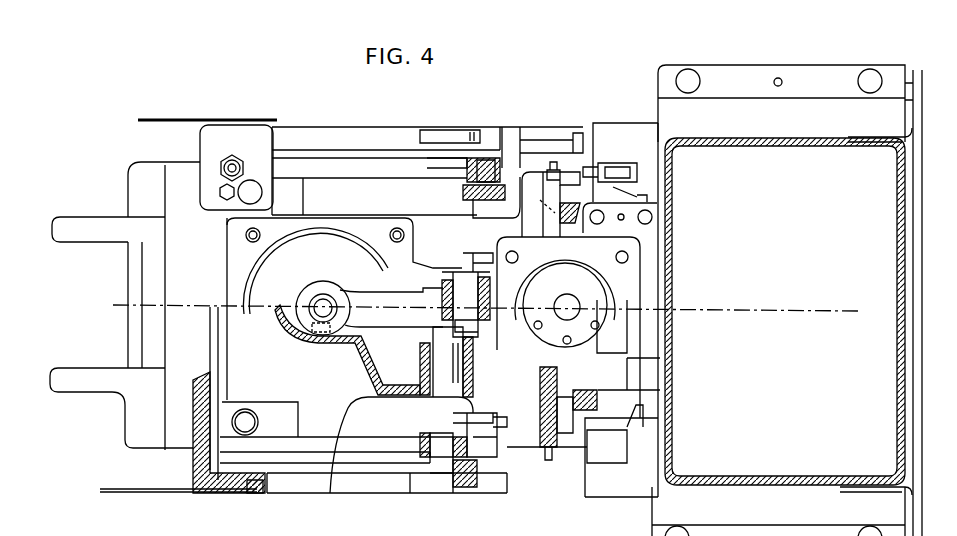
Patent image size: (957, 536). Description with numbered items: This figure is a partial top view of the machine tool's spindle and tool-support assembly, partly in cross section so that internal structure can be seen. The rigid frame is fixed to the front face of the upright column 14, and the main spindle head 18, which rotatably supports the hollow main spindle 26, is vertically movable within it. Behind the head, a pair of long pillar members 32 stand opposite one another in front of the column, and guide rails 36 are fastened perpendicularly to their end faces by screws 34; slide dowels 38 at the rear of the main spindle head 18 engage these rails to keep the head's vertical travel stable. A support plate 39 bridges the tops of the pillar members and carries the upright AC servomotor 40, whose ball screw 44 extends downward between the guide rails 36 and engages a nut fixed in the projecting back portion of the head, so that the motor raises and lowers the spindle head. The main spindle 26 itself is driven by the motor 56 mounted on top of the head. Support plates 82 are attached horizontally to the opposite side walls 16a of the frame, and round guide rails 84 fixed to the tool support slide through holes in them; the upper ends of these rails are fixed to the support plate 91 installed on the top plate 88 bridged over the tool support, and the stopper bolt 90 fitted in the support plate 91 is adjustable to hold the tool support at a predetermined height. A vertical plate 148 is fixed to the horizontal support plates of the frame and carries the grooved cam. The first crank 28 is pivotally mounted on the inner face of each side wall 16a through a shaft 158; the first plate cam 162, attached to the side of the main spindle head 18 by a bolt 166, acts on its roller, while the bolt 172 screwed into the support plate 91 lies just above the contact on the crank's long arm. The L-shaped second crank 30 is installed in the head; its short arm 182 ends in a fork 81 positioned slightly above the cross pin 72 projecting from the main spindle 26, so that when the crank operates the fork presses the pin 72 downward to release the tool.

The column 14 is at (742, 140).
The side wall 16a is at (368, 152).
The main spindle head 18 is at (347, 403).
The main spindle 26 is at (317, 308).
The first crank 28 is at (315, 167).
The second crank 30 is at (377, 290).
The long pillar member 32 is at (672, 225).
The screw 34 is at (583, 388).
The guide rail 36 is at (575, 203).
The slide dowel 38 is at (546, 203).
The support plate 39 is at (650, 253).
The AC servomotor 40 is at (583, 290).
The ball screw 44 is at (575, 313).
The motor 56 is at (277, 250).
The pin 72 is at (297, 322).
The fork 81 is at (340, 337).
The support plate 82 is at (298, 200).
The round guide rail 84 is at (250, 183).
The top plate 88 is at (175, 283).
The stopper bolt 90 is at (218, 192).
The support plate 91 is at (233, 133).
The vertical plate 148 is at (205, 327).
The shaft 158 is at (450, 180).
The first plate cam 162 is at (514, 173).
The bolt 166 is at (383, 467).
The bolt 172 is at (220, 165).
The short arm 182 is at (387, 315).